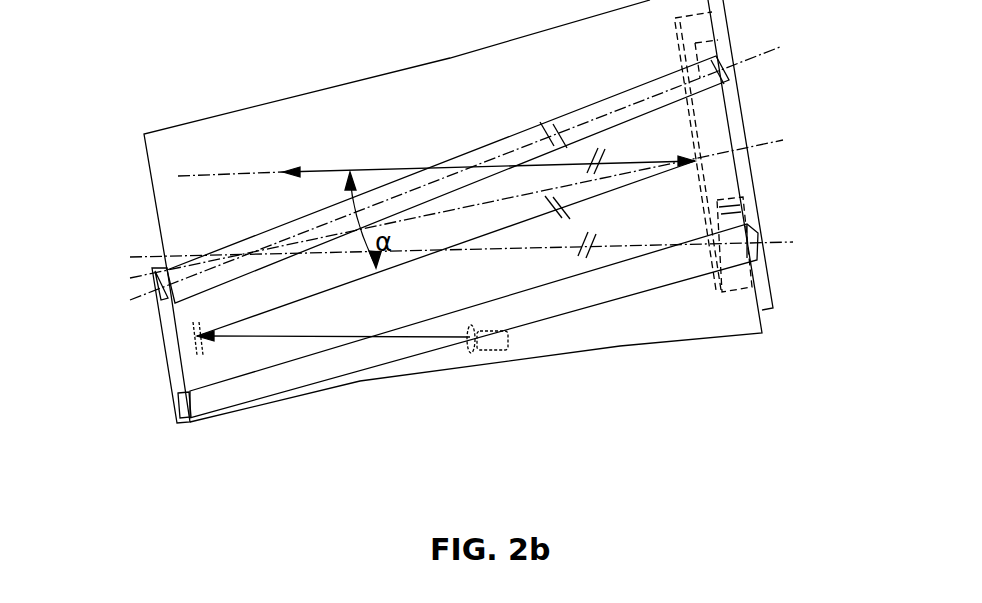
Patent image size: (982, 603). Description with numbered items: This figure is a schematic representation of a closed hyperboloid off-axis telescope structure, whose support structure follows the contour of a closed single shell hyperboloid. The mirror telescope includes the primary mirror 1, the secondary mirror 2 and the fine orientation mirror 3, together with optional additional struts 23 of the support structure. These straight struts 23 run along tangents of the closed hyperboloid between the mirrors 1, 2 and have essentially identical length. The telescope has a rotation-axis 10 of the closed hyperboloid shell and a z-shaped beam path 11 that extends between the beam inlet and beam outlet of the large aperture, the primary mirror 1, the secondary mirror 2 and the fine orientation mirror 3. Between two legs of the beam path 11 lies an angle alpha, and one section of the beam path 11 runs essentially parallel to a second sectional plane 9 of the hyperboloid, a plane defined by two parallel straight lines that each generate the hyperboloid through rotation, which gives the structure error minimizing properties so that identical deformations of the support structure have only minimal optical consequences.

The primary mirror 1 is at (702, 181).
The secondary mirror 2 is at (185, 345).
The fine orientation mirror 3 is at (483, 349).
The second sectional plane 9 is at (532, 140).
The rotation-axis 10 is at (587, 187).
The z-shaped beam path 11 is at (377, 167).
The additional struts 23 is at (602, 108).